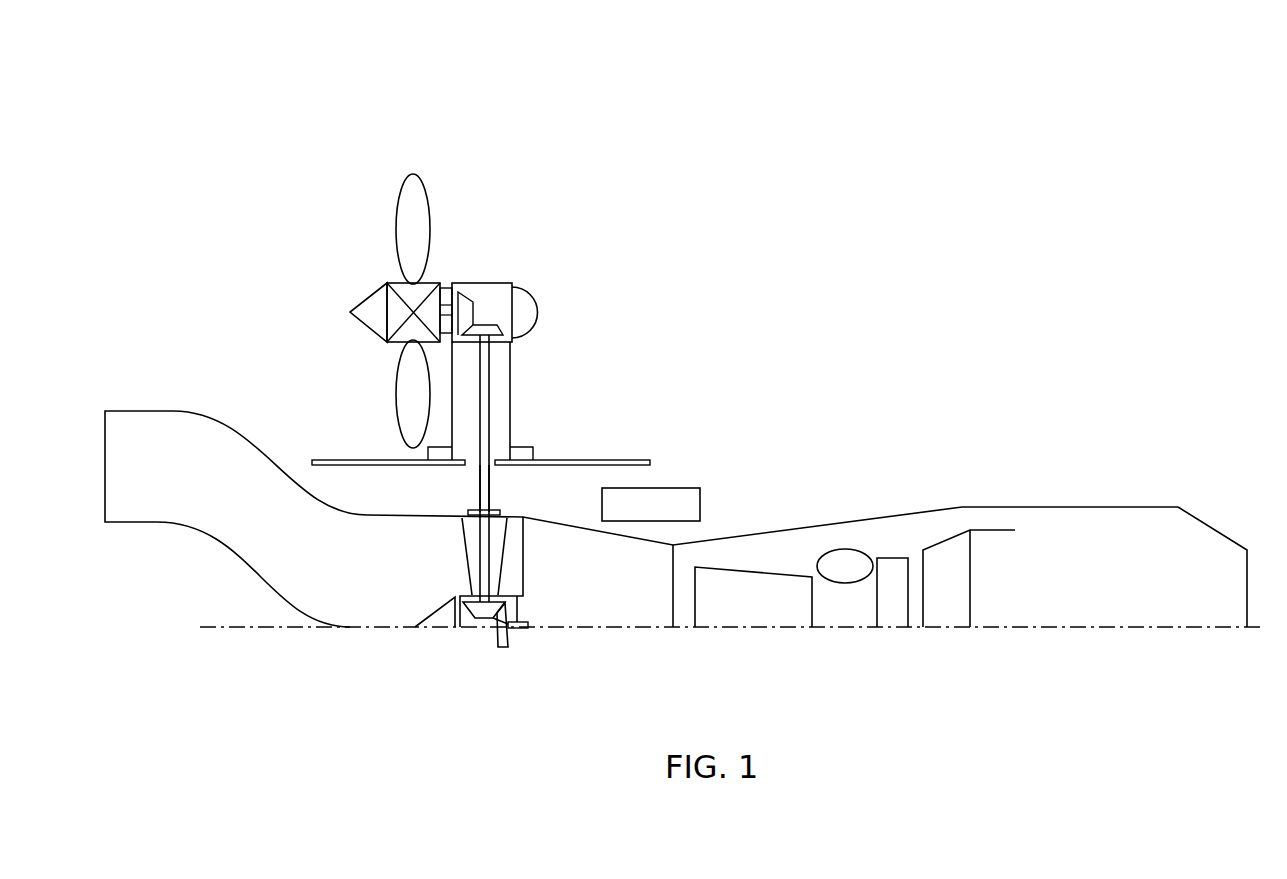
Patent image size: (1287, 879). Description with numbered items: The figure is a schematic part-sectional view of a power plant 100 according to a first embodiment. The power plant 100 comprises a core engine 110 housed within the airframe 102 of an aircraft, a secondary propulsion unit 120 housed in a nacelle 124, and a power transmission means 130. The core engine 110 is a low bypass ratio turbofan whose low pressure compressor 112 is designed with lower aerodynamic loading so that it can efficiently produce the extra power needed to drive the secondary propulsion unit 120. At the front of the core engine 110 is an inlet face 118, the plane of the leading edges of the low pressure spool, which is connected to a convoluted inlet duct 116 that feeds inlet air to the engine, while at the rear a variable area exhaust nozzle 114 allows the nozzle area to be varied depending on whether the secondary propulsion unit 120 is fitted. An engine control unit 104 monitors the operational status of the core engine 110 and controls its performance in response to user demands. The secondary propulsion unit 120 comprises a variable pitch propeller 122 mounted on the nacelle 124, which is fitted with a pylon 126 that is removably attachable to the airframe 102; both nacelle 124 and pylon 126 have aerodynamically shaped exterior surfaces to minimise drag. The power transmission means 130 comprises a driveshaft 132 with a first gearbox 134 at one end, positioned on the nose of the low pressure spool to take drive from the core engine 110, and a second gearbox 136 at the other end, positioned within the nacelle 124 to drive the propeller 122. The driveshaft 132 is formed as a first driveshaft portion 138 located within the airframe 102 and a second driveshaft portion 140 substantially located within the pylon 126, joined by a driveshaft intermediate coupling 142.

The power plant 100 is at (895, 147).
The airframe 102 is at (627, 460).
The engine control unit 104 is at (663, 482).
The core engine 110 is at (810, 523).
The low pressure compressor 112 is at (567, 613).
The variable area exhaust nozzle 114 is at (1222, 532).
The convoluted inlet duct 116 is at (148, 410).
The inlet face 118 is at (523, 563).
The secondary propulsion unit 120 is at (515, 287).
The propeller 122 is at (368, 284).
The nacelle 124 is at (537, 307).
The pylon 126 is at (510, 390).
The power transmission means 130 is at (490, 445).
The driveshaft 132 is at (485, 418).
The first gearbox 134 is at (487, 623).
The second gearbox 136 is at (492, 297).
The first driveshaft portion 138 is at (472, 538).
The second driveshaft portion 140 is at (490, 482).
The driveshaft intermediate coupling 142 is at (468, 512).